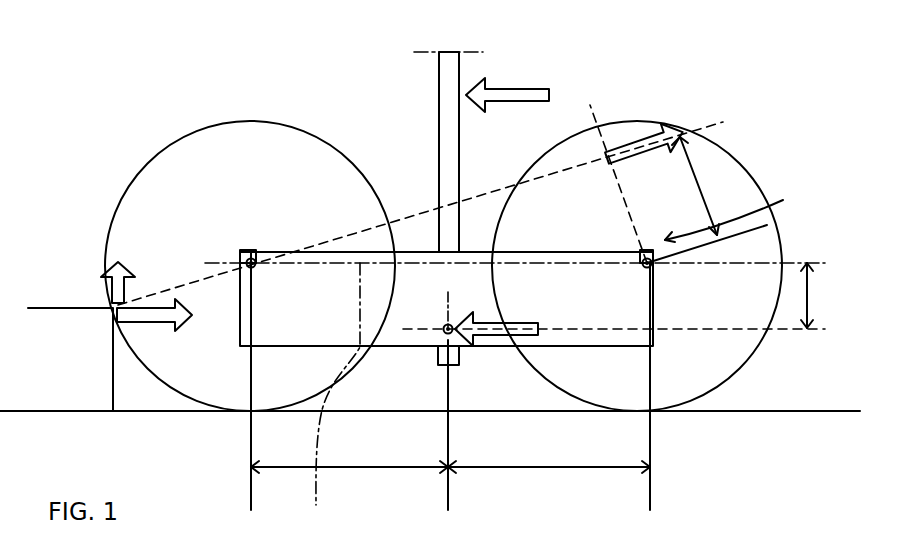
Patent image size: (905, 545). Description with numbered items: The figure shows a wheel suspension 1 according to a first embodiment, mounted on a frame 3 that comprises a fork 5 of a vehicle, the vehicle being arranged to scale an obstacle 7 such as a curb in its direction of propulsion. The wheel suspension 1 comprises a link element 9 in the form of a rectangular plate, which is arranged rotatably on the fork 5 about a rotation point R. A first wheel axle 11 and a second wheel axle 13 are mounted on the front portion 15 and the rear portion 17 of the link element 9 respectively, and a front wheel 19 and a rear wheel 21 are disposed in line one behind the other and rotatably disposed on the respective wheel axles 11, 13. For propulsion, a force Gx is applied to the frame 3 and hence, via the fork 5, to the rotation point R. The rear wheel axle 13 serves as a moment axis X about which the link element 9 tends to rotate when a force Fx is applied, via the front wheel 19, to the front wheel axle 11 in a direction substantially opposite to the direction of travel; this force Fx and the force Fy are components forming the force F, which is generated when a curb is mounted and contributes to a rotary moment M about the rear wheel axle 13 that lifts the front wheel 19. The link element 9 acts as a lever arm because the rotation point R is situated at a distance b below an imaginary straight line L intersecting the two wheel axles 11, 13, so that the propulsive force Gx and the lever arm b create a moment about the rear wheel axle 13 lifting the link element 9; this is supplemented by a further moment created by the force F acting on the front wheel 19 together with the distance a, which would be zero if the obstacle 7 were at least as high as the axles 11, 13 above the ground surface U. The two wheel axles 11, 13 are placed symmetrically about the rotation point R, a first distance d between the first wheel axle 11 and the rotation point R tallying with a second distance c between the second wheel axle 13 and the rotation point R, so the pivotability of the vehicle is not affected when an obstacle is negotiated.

The wheel suspension 1 is at (137, 116).
The frame 3 is at (480, 30).
The fork 5 is at (437, 112).
The obstacle 7 is at (62, 307).
The link element 9 is at (413, 250).
The first wheel axle 11 is at (400, 250).
The second wheel axle 13 is at (737, 216).
The front portion 15 is at (288, 363).
The rear portion 17 is at (637, 363).
The front wheel 19 is at (237, 123).
The rear wheel 21 is at (712, 148).
The force Fx is at (120, 315).
The force Fy is at (118, 262).
The propulsive force Gx is at (533, 88).
The force F is at (633, 143).
The distance a is at (698, 180).
The distance b is at (807, 282).
The second distance c is at (538, 468).
The first distance d is at (360, 468).
The imaginary straight line L is at (336, 400).
The rotary moment M is at (568, 240).
The rotation point R is at (441, 365).
The ground surface U is at (778, 410).
The moment axis X is at (655, 268).